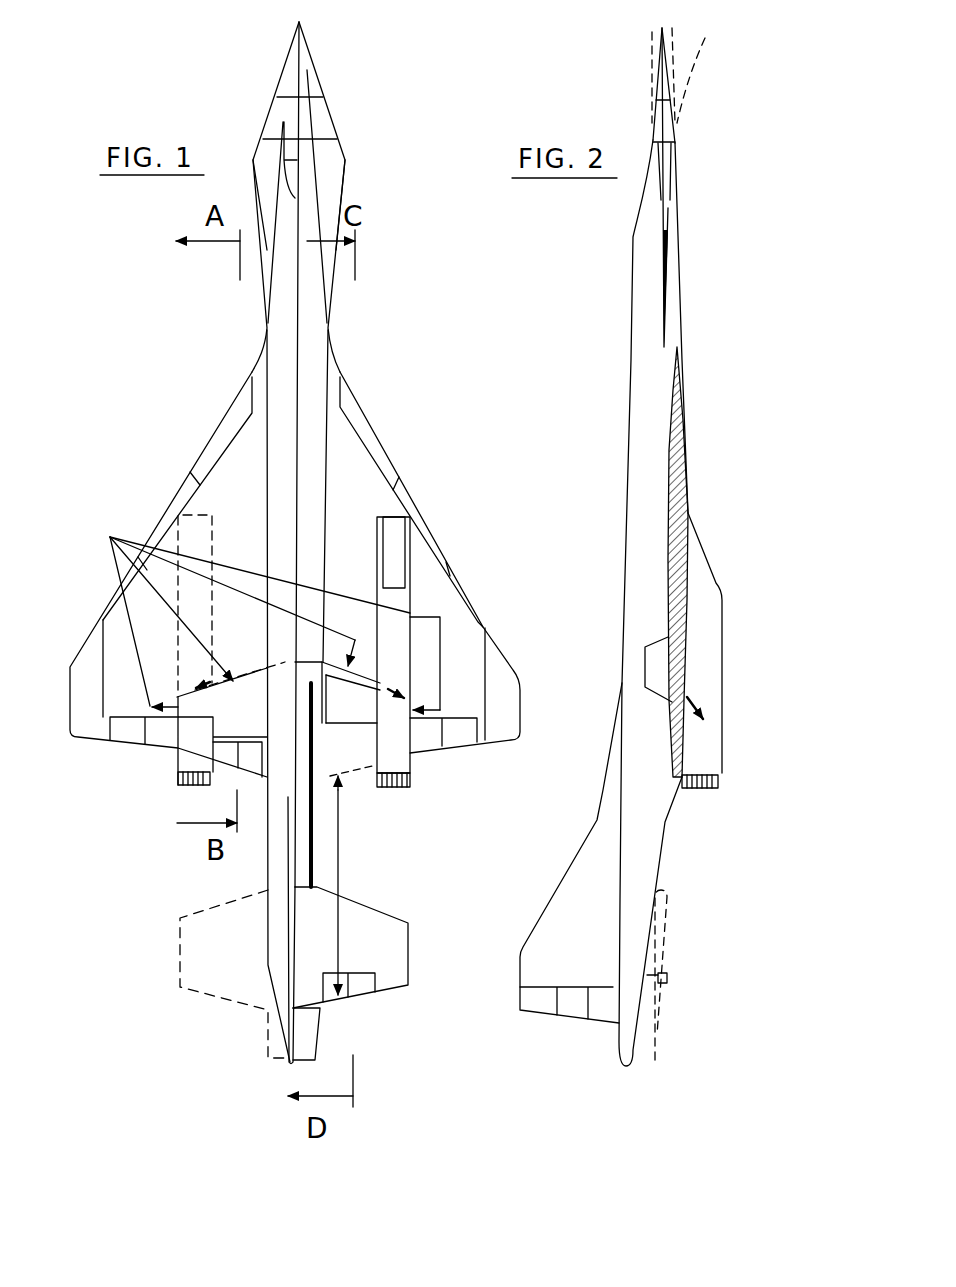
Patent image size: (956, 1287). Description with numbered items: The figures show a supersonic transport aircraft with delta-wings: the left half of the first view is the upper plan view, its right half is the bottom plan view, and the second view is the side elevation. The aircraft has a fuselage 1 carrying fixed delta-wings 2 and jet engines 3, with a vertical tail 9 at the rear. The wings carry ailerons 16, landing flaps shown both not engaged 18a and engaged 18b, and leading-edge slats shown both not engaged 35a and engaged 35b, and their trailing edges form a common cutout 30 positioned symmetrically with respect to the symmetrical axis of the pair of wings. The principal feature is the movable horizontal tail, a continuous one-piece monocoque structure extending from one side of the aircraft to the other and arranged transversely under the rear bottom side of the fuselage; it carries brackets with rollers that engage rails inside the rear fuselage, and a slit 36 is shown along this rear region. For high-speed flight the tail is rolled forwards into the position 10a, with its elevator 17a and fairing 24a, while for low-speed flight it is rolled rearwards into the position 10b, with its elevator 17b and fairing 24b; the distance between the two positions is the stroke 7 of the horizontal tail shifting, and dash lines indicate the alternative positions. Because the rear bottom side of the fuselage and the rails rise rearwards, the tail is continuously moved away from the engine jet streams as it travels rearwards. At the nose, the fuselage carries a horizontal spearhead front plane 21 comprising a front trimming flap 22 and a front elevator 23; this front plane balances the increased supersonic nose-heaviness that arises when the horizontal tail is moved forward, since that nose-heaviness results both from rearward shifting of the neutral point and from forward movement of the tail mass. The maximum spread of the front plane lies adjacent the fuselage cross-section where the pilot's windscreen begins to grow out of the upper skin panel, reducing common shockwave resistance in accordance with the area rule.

In FIG. 1, the fuselage 1 is at (305, 278).
In FIG. 2, the fuselage 1 is at (645, 320).
In FIG. 1, the fixed delta-wings 2 is at (352, 485).
In FIG. 2, the fixed delta-wings 2 is at (677, 483).
In FIG. 1, the jet engines 3 is at (398, 600).
In FIG. 2, the jet engines 3 is at (702, 583).
In FIG. 1, the stroke of the horizontal tail shifting 7 is at (337, 862).
In FIG. 2, the vertical tail 9 is at (588, 888).
In FIG. 1, the horizontal tail in its forward high-speed flight position 10a is at (194, 739).
In FIG. 2, the horizontal tail in its forward high-speed flight position 10a is at (622, 683).
In FIG. 1, the horizontal tail in its rearward low-speed flight position 10b is at (385, 958).
In FIG. 2, the horizontal tail in its rearward low-speed flight position 10b is at (667, 948).
In FIG. 1, the ailerons 16 is at (130, 730).
In FIG. 1, the elevator in its forward high-speed flight position 17a is at (229, 757).
In FIG. 2, the elevator in its forward high-speed flight position 17a is at (682, 752).
In FIG. 1, the elevator in its rearward low-speed flight position 17b is at (357, 987).
In FIG. 2, the elevator in its rearward low-speed flight position 17b is at (665, 985).
In FIG. 2, the landing flaps not engaged 18a is at (647, 647).
In FIG. 1, the landing flaps engaged 18b is at (343, 705).
In FIG. 2, the landing flaps engaged 18b is at (697, 712).
In FIG. 1, the spearhead front plane 21 is at (330, 188).
In FIG. 2, the spearhead front plane 21 is at (662, 197).
In FIG. 1, the front trimming flap 22 is at (321, 124).
In FIG. 2, the front trimming flap 22 is at (665, 133).
In FIG. 1, the front elevator 23 is at (301, 61).
In FIG. 2, the front elevator 23 is at (660, 68).
In FIG. 2, the fairing in its forward high-speed flight position 24a is at (673, 780).
In FIG. 2, the fairing in its rearward low-speed flight position 24b is at (658, 1030).
In FIG. 1, the common cutout in the trailing edges of the pair of wings 30 is at (258, 614).
In FIG. 1, the slat not engaged 35a is at (226, 426).
In FIG. 1, the slat engaged 35b is at (365, 428).
In FIG. 1, the slit 36 is at (313, 828).